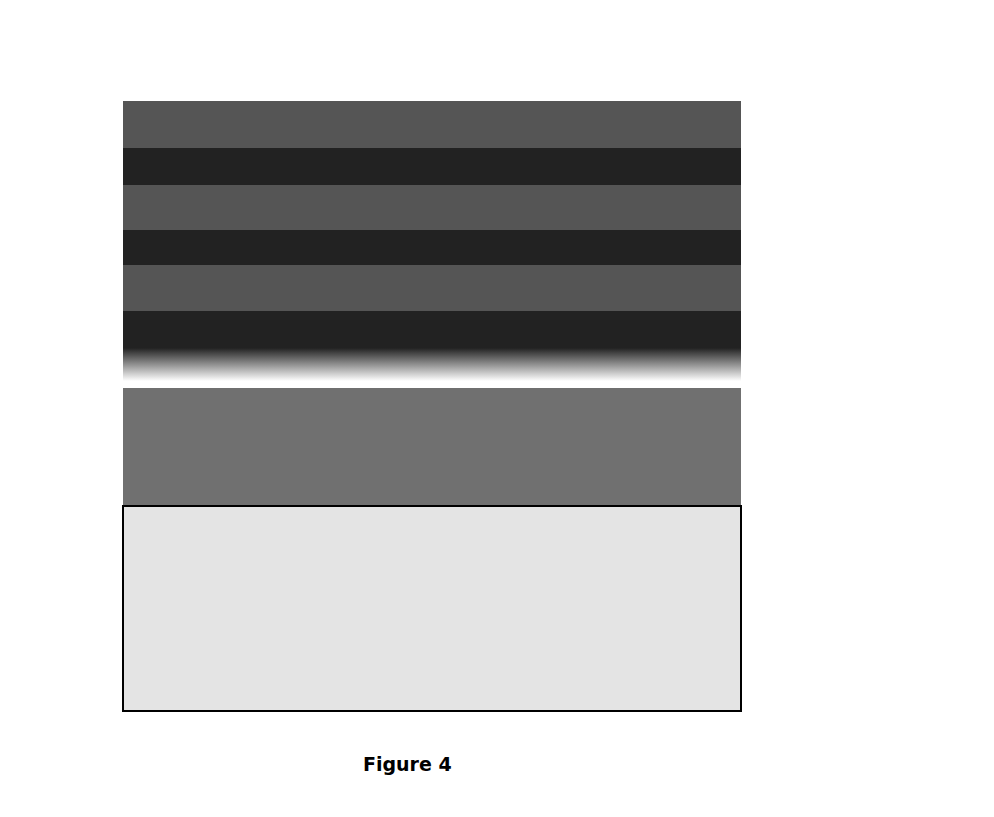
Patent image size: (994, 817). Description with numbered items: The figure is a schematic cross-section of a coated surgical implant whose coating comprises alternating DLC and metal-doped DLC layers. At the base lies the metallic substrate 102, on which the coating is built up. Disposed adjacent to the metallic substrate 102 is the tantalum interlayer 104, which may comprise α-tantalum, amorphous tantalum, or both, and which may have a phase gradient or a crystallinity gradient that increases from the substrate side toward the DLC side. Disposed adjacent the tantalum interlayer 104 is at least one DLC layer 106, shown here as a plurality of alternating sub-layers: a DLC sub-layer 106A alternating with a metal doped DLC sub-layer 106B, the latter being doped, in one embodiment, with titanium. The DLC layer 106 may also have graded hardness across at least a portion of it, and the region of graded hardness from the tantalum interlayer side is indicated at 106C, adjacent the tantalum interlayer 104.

The metallic substrate 102 is at (728, 570).
The tantalum interlayer 104 is at (735, 447).
The DLC layer 106 is at (436, 214).
The DLC sub-layer 106A is at (668, 112).
The metal doped DLC sub-layer 106B is at (716, 158).
The graded hardness portion 106C is at (122, 363).